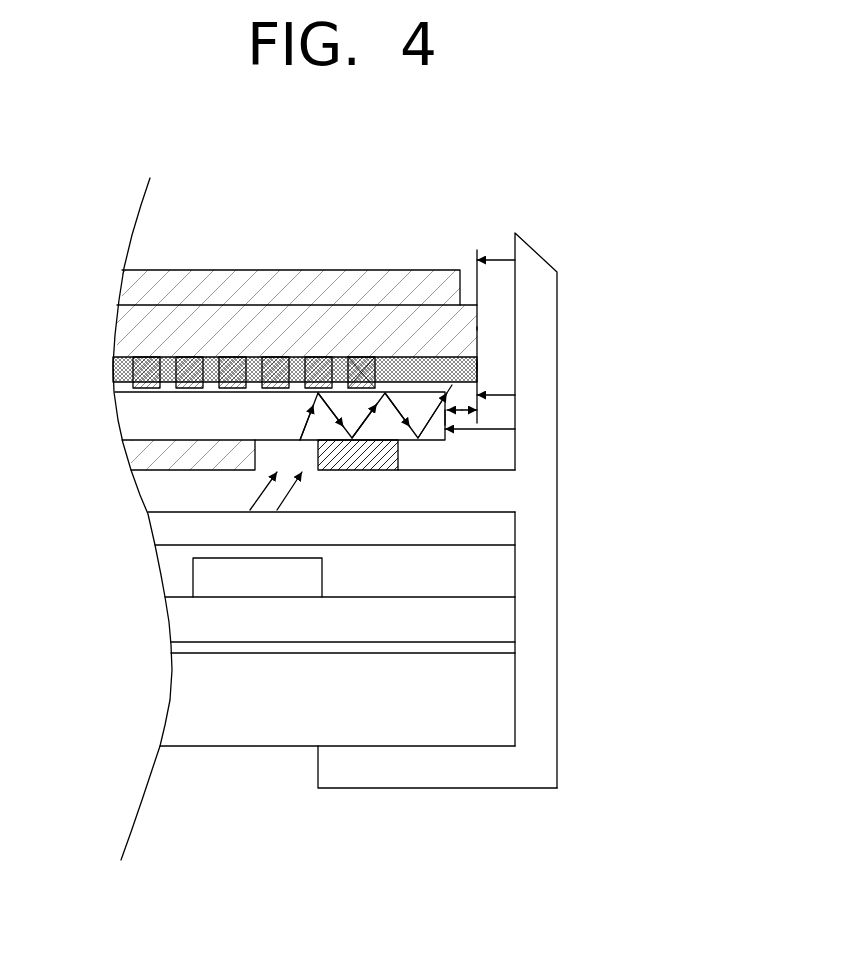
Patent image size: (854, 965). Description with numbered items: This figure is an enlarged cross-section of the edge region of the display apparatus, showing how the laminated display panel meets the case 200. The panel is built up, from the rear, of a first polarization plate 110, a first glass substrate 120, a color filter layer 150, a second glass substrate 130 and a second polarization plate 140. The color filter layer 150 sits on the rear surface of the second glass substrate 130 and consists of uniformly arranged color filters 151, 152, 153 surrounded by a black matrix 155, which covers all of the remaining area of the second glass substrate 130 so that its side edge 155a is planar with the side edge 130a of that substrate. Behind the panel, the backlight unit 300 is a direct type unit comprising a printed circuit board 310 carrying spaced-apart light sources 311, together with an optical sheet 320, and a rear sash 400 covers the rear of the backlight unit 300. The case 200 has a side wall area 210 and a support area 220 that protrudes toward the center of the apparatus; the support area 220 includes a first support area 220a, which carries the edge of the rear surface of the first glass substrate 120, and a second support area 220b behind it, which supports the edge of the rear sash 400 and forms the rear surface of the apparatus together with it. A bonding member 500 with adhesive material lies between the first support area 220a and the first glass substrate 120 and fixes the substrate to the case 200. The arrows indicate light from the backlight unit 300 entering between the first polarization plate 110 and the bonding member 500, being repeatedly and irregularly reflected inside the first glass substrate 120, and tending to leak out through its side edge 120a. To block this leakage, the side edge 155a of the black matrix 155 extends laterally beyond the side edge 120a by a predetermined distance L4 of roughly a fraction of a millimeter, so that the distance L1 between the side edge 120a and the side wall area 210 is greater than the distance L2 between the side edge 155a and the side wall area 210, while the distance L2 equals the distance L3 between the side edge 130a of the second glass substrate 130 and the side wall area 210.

The first polarization plate 110 is at (138, 456).
The first glass substrate 120 is at (133, 414).
The side edge of the first glass substrate 120a is at (447, 416).
The second glass substrate 130 is at (135, 335).
The side edge of the second glass substrate 130a is at (477, 327).
The second polarization plate 140 is at (133, 290).
The color filter layer 150 is at (344, 310).
The color filter 151 is at (148, 368).
The color filter 152 is at (187, 368).
The color filter 153 is at (232, 368).
The black matrix 155 is at (334, 362).
The side edge of the black matrix 155a is at (477, 366).
The case 200 is at (553, 510).
The side wall area 210 is at (545, 462).
The support area 220 is at (517, 629).
The first support area 220a is at (465, 493).
The second support area 220b is at (475, 767).
The backlight unit 300 is at (263, 659).
The printed circuit board 310 is at (181, 624).
The light source 311 is at (243, 582).
The optical sheet 320 is at (163, 528).
The rear sash 400 is at (183, 712).
The bonding member 500 is at (392, 447).
The distance L1 is at (515, 429).
The distance L2 is at (515, 395).
The distance L3 is at (495, 258).
The predetermined distance L4 is at (464, 406).